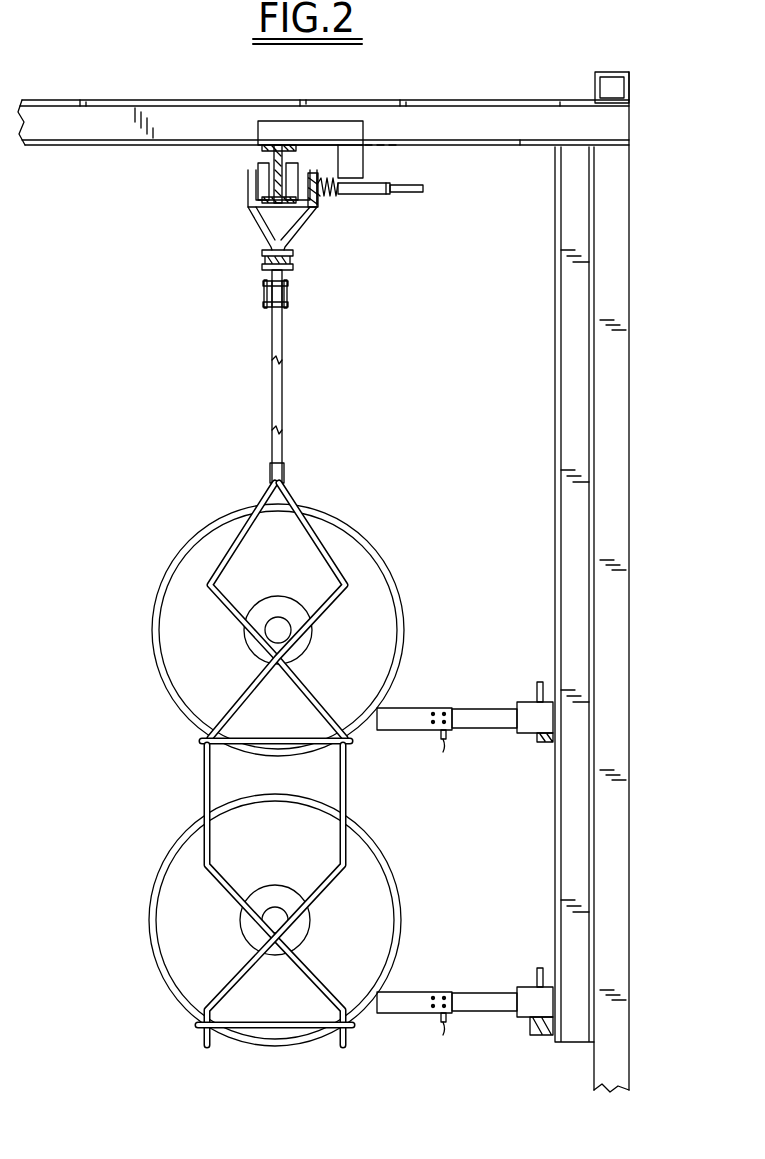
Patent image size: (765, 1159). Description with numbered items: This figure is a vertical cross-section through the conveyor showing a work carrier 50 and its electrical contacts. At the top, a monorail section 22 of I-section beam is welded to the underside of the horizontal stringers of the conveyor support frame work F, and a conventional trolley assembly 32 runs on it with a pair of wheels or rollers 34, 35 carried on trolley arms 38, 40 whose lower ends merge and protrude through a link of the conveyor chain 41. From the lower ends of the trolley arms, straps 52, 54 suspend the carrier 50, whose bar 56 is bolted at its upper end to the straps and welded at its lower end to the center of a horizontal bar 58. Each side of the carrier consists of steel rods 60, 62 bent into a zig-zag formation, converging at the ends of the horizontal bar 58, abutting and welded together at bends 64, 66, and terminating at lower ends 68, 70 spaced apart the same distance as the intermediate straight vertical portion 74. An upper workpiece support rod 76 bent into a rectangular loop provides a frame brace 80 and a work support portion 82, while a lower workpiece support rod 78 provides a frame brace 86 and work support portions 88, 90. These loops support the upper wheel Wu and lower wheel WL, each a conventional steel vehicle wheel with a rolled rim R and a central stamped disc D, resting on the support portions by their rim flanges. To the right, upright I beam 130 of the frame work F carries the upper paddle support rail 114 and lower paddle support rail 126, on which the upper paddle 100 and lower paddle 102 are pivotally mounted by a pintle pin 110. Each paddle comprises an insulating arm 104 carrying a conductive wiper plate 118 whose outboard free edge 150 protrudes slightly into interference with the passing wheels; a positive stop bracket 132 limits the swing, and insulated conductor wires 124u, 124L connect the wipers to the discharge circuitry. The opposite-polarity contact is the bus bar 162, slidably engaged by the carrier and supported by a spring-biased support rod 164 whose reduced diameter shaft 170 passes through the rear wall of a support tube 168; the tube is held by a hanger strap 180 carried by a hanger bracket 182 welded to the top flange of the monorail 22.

The conveyor support frame work F is at (633, 212).
The upright I beam 130 is at (554, 336).
The hanger bracket 182 is at (284, 121).
The monorail section 22 is at (286, 142).
The trolley wheel 35 is at (257, 168).
The trolley assembly 32 is at (246, 201).
The trolley arm 40 is at (250, 223).
The trolley arm 38 is at (300, 226).
The trolley wheel 34 is at (324, 172).
The bus bar 162 is at (322, 207).
The support rod 164 is at (340, 183).
The hanger strap 180 is at (361, 170).
The reduced diameter shaft 170 is at (424, 188).
The support tube 168 is at (386, 196).
The conveyor chain 41 is at (296, 261).
The bar 56 is at (284, 388).
The strap 52 is at (263, 290).
The strap 54 is at (289, 296).
The horizontal bar 58 is at (284, 472).
The rim R is at (378, 546).
The upper wheel Wu is at (153, 589).
The lower wheel WL is at (150, 938).
The central disc D is at (358, 728).
The side frame rod 62 is at (232, 524).
The side frame rod 60 is at (319, 521).
The bend 64 is at (288, 656).
The outboard free edge 150 is at (372, 706).
The frame brace 80 is at (269, 737).
The work support portion 82 is at (200, 742).
The upper workpiece support rod 76 is at (318, 748).
The work carrier 50 is at (202, 772).
The intermediate straight vertical portion 74 is at (204, 793).
The bend 66 is at (288, 946).
The work support portion 88 is at (354, 1028).
The work support portion 90 is at (196, 1026).
The lower end 70 is at (207, 1046).
The frame brace 86 is at (262, 1040).
The lower workpiece support rod 78 is at (300, 1048).
The lower end 68 is at (343, 1046).
The wiper plate 118 is at (411, 706).
The upper paddle 100 is at (476, 706).
The insulating arm 104 is at (491, 728).
The lower paddle 102 is at (473, 990).
The stop bracket 132 is at (522, 700).
The pintle pin 110 is at (543, 683).
The upper paddle support rail 114 is at (546, 746).
The lower paddle support rail 126 is at (543, 1038).
The upper paddle power lead 124u is at (442, 754).
The lower paddle power lead 124L is at (442, 1037).